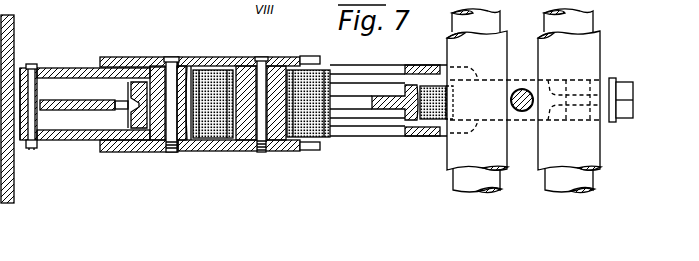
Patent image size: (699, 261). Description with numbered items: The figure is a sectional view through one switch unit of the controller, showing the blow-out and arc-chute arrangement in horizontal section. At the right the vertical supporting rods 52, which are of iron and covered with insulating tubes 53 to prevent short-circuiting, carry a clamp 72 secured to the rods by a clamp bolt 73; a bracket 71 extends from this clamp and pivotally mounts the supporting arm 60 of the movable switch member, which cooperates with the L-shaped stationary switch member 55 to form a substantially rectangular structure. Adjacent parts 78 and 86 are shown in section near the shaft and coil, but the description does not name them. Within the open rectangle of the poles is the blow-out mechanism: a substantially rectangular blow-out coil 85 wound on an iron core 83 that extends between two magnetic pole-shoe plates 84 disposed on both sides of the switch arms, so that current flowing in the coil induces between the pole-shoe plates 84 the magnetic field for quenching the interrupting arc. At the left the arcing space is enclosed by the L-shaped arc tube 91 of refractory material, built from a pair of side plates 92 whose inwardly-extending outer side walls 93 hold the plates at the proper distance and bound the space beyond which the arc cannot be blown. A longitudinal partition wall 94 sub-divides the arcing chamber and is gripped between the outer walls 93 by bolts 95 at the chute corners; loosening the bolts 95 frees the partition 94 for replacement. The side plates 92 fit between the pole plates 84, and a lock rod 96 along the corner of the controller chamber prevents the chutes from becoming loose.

The supporting rods 52 is at (465, 22).
The insulating tubes 53 is at (623, 65).
The stationary switch member 55 is at (128, 112).
The supporting arm 60 is at (384, 110).
The bracket 71 is at (414, 121).
The clamp 72 is at (606, 120).
The clamp bolt 73 is at (522, 111).
The bearing blocks 78 is at (432, 136).
The iron core 83 is at (263, 152).
The pole-shoe plates 84 is at (118, 55).
The blow-out coil 85 is at (316, 150).
The left coil 86 is at (228, 57).
The arc tube 91 is at (75, 122).
The side plates 92 is at (60, 68).
The outer side walls 93 is at (16, 90).
The partition wall 94 is at (71, 101).
The bolts 95 is at (32, 148).
The lock rod 96 is at (14, 188).